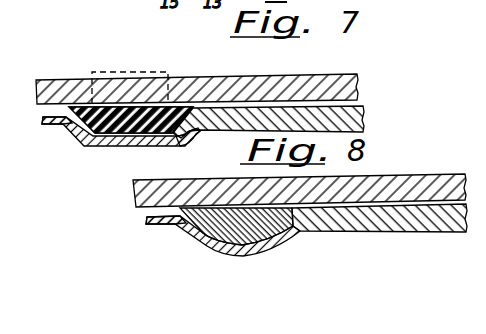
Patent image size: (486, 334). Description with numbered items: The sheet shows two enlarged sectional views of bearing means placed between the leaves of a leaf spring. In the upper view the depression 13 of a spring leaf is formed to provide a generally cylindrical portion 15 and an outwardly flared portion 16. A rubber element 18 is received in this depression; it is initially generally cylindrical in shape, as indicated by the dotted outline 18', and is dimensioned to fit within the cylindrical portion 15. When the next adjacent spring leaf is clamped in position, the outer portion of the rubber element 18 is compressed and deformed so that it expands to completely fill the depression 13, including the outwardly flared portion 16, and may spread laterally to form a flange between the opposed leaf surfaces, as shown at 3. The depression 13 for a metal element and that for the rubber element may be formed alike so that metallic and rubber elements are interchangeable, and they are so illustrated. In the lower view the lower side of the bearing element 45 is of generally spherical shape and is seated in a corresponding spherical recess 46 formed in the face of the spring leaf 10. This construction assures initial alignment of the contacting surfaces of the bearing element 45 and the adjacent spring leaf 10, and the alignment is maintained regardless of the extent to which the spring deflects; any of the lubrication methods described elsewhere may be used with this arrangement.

In FIG. 7, the flange 3 is at (190, 106).
In FIG. 7, the spring leaf 10 is at (229, 128).
In FIG. 8, the spring leaf 10 is at (351, 233).
In FIG. 7, the depression 13 is at (112, 143).
In FIG. 7, the cylindrical portion 15 is at (79, 135).
In FIG. 7, the outwardly flared portion 16 is at (190, 131).
In FIG. 7, the rubber element 18 is at (131, 143).
In FIG. 7, the rubber element in initial shape 18' is at (130, 72).
In FIG. 8, the bearing element 45 is at (197, 242).
In FIG. 8, the spherical recess 46 is at (272, 245).